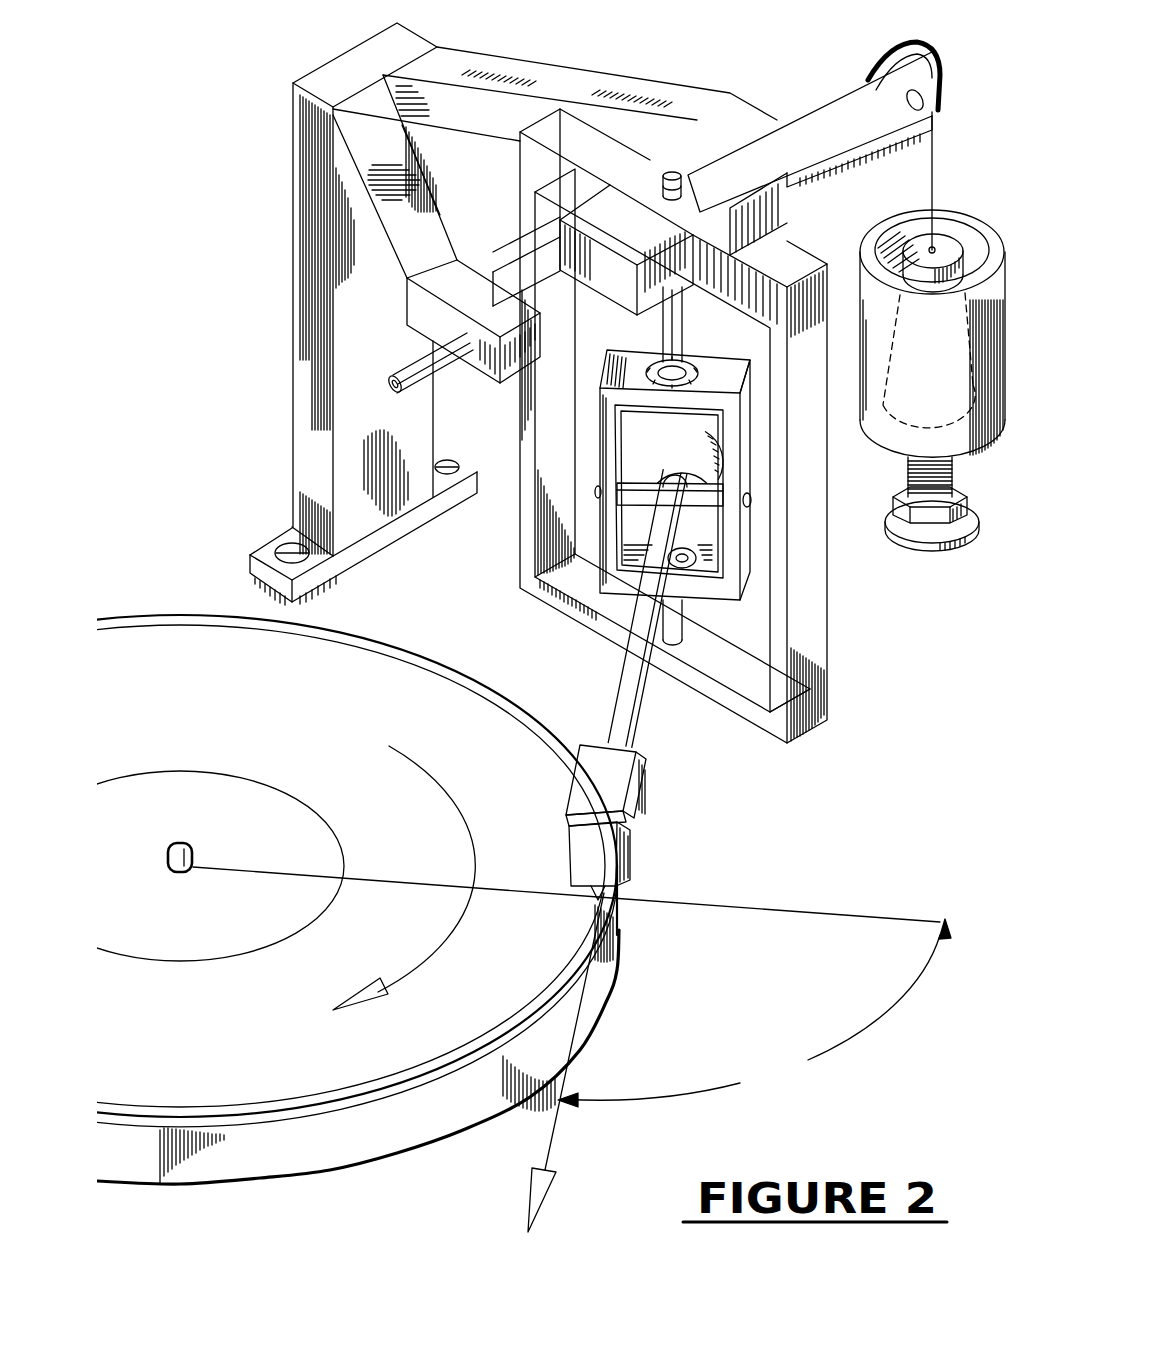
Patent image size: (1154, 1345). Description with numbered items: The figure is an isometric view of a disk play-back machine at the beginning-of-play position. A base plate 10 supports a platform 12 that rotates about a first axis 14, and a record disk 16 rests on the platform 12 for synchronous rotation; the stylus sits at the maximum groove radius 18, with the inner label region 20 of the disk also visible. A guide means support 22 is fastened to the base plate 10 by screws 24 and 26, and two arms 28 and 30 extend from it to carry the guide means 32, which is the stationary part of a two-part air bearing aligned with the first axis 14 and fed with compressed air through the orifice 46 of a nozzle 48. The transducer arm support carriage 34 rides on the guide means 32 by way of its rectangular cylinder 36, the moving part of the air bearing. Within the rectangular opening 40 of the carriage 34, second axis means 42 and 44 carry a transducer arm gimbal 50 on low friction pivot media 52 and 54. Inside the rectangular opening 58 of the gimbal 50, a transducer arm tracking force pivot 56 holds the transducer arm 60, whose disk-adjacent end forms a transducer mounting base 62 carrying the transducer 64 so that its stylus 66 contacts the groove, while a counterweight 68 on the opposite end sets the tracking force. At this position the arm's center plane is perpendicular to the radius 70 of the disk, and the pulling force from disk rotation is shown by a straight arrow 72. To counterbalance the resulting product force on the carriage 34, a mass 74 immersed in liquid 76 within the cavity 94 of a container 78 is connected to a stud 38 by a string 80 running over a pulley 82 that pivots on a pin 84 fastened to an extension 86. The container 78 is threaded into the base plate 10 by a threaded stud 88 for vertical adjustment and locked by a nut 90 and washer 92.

The base plate 10 is at (898, 853).
The platform 12 is at (323, 1178).
The first axis 14 is at (188, 848).
The record disk 16 is at (180, 596).
The maximum groove radius 18 is at (268, 630).
The record label area 20 is at (272, 785).
The guide means support 22 is at (276, 352).
The screw 24 is at (262, 545).
The screw 26 is at (458, 460).
The arm 28 is at (390, 292).
The arm 30 is at (552, 64).
The guide means 32 is at (507, 262).
The transducer arm support carriage 34 is at (842, 687).
The rectangular cylinder 36 is at (580, 270).
The stud 38 is at (675, 172).
The rectangular opening 40 is at (756, 637).
The second axis means 42 is at (684, 322).
The second axis means 44 is at (684, 640).
The orifice 46 is at (392, 392).
The nozzle 48 is at (398, 364).
The transducer arm gimbal 50 is at (632, 350).
The low friction pivot media 52 is at (698, 376).
The low friction pivot media 54 is at (690, 552).
The transducer arm tracking force pivot 56 is at (670, 509).
The rectangular opening 58 is at (650, 434).
The transducer arm 60 is at (612, 672).
The transducer mounting base 62 is at (569, 794).
The transducer 64 is at (569, 847).
The stylus 66 is at (595, 903).
The counterweight 68 is at (690, 456).
The radius 70 is at (888, 918).
The straight arrow 72 is at (547, 1192).
The mass 74 is at (947, 235).
The liquid 76 is at (973, 245).
The container 78 is at (892, 455).
The string 80 is at (753, 132).
The pulley 82 is at (903, 43).
The pin 84 is at (907, 104).
The extension 86 is at (822, 178).
The threaded stud 88 is at (955, 465).
The nut 90 is at (897, 478).
The washer 92 is at (925, 543).
The cavity 94 is at (912, 226).